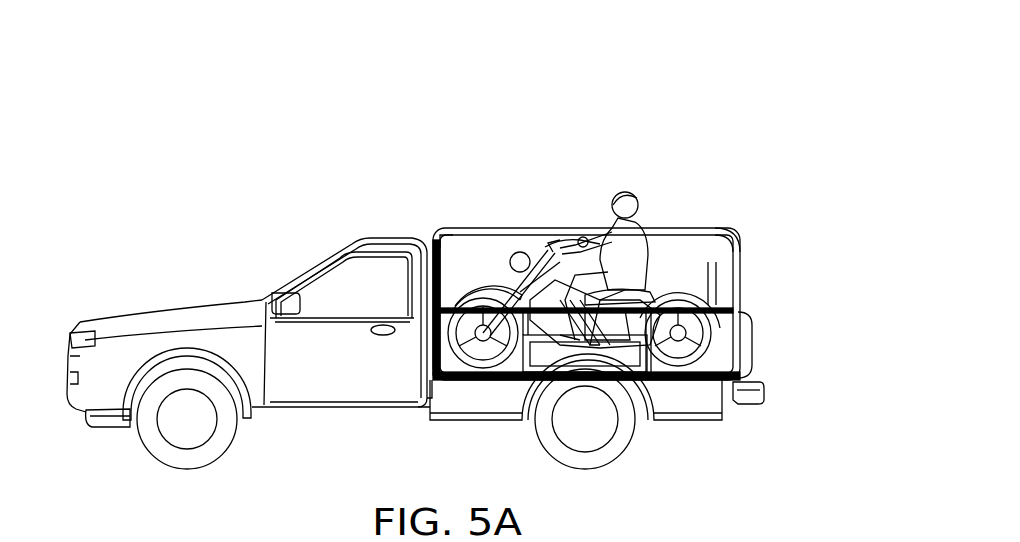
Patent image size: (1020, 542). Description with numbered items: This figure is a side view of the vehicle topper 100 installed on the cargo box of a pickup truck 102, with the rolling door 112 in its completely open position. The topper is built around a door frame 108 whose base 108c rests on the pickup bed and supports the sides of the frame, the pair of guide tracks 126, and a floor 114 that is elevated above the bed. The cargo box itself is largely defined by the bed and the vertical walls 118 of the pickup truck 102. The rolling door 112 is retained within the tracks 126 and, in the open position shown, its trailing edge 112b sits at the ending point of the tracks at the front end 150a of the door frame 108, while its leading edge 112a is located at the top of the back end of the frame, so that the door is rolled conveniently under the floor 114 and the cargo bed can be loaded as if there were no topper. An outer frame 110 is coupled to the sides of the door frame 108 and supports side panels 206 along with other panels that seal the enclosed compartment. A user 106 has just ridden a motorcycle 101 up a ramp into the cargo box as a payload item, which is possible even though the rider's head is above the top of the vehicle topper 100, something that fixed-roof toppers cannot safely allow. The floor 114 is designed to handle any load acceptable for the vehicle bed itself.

The vehicle topper 100 is at (466, 88).
The motorcycle 101 is at (486, 248).
The pickup truck 102 is at (227, 230).
The user 106 is at (604, 191).
The door frame 108 is at (698, 224).
The base 108c is at (449, 405).
The outer frame 110 is at (752, 256).
The rolling door 112 is at (641, 418).
The leading edge 112a is at (439, 231).
The trailing edge 112b is at (737, 405).
The floor 114 is at (734, 350).
The vertical walls 118 is at (745, 318).
The guide tracks 126 is at (580, 234).
The front end 150a is at (790, 369).
The side panels 206 is at (713, 253).